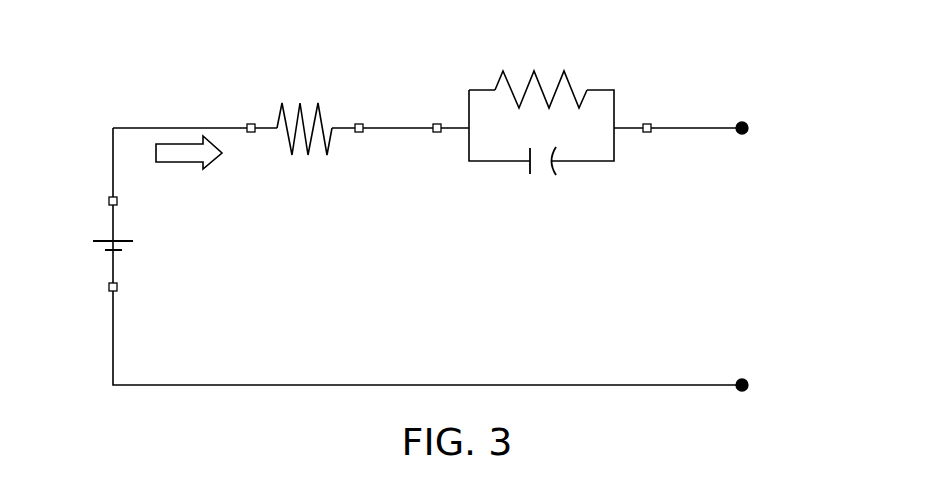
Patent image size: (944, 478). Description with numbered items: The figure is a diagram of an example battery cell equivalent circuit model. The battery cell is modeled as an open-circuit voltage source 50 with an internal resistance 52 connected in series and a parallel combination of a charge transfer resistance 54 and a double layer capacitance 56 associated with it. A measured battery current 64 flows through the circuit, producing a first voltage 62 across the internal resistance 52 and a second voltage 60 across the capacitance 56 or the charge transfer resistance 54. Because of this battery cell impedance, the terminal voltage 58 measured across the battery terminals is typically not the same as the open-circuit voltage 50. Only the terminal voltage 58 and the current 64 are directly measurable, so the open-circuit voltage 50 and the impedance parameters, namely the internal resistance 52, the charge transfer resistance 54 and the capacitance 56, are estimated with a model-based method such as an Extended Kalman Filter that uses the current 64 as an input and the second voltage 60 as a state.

The voltage source Voc 50 is at (125, 238).
The resistance r1 52 is at (277, 127).
The resistance r2 54 is at (564, 121).
The capacitance C 56 is at (527, 168).
The terminal voltage Vt 58 is at (752, 247).
The voltage V2 60 is at (527, 128).
The voltage V1 across resistor r1 62 is at (310, 193).
The current I 64 is at (170, 103).